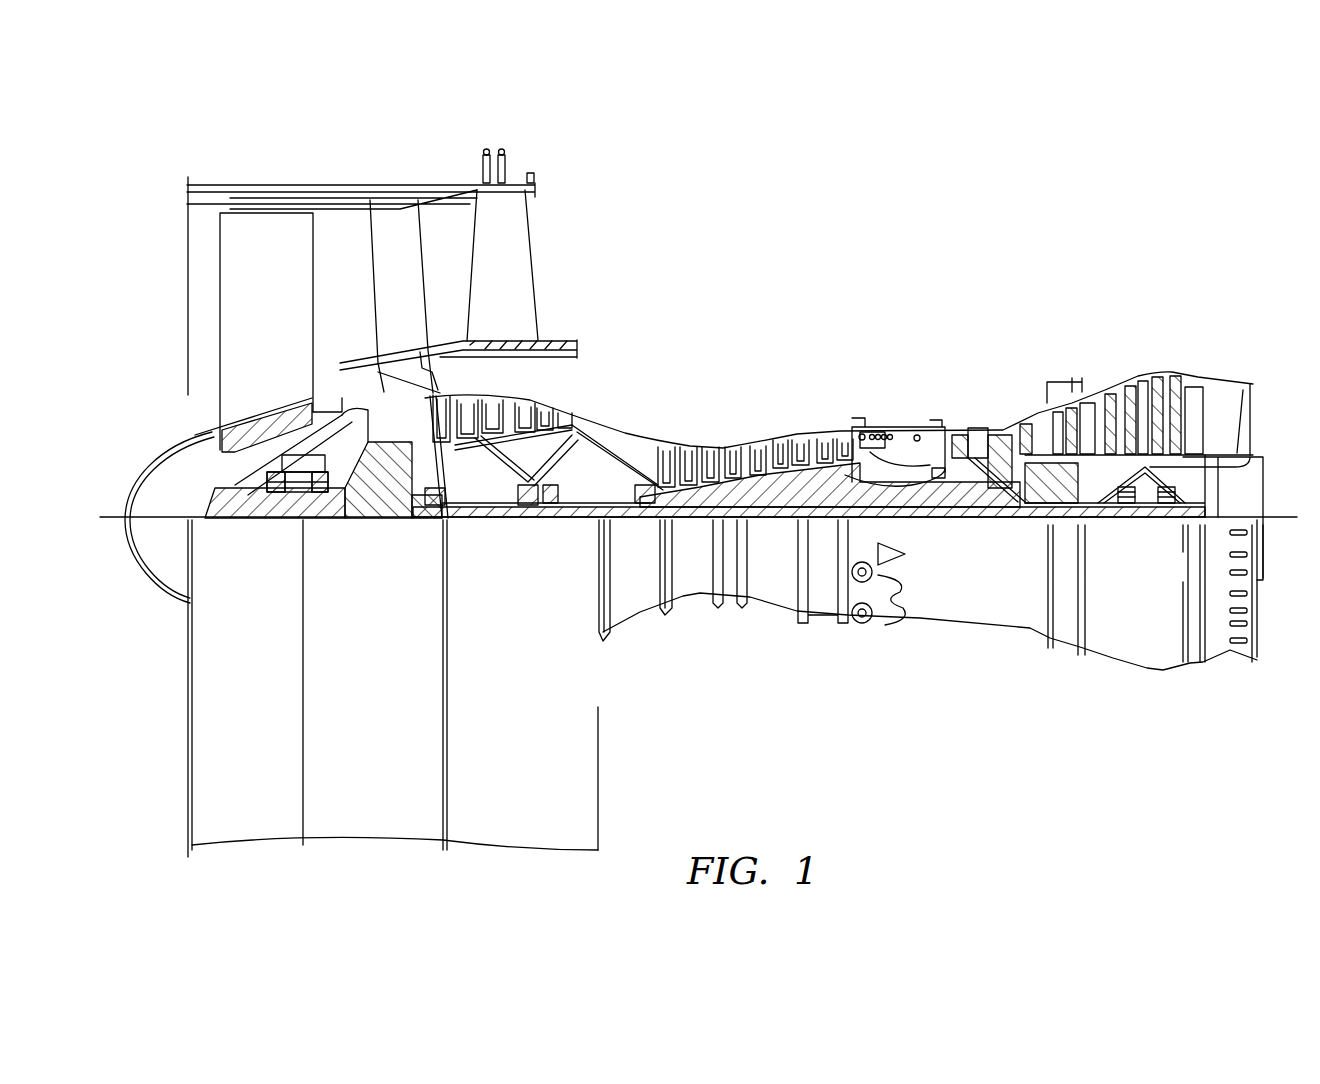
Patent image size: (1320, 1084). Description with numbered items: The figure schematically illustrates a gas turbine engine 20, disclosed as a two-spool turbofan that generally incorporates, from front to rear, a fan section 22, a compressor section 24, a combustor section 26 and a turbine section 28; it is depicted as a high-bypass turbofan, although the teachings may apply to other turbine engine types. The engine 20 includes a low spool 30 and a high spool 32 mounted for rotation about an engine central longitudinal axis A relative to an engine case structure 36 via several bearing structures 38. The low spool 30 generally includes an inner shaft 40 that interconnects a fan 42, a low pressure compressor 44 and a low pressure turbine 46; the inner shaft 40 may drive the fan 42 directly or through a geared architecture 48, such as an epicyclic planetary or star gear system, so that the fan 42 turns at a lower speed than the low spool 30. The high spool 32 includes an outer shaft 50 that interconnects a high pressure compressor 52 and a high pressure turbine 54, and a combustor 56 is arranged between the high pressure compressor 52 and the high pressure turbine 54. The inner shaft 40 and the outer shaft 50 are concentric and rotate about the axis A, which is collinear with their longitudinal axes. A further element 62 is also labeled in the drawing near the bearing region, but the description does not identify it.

The gas turbine engine 20 is at (1019, 240).
The fan section 22 is at (440, 165).
The compressor section 24 is at (447, 303).
The combustor section 26 is at (962, 303).
The turbine section 28 is at (1192, 310).
The low spool 30 is at (780, 526).
The high spool 32 is at (823, 480).
The engine case structure 36 is at (830, 620).
The bearing structures 38 is at (1050, 387).
The inner shaft 40 is at (623, 522).
The fan 42 is at (279, 312).
The low pressure compressor 44 is at (523, 403).
The low pressure turbine 46 is at (1120, 383).
The geared architecture 48 is at (395, 495).
The outer shaft 50 is at (908, 500).
The high pressure compressor 52 is at (757, 480).
The high pressure turbine 54 is at (985, 438).
The combustor 56 is at (907, 452).
The bearing support structure 62 is at (685, 525).
The engine central longitudinal axis A is at (1283, 513).